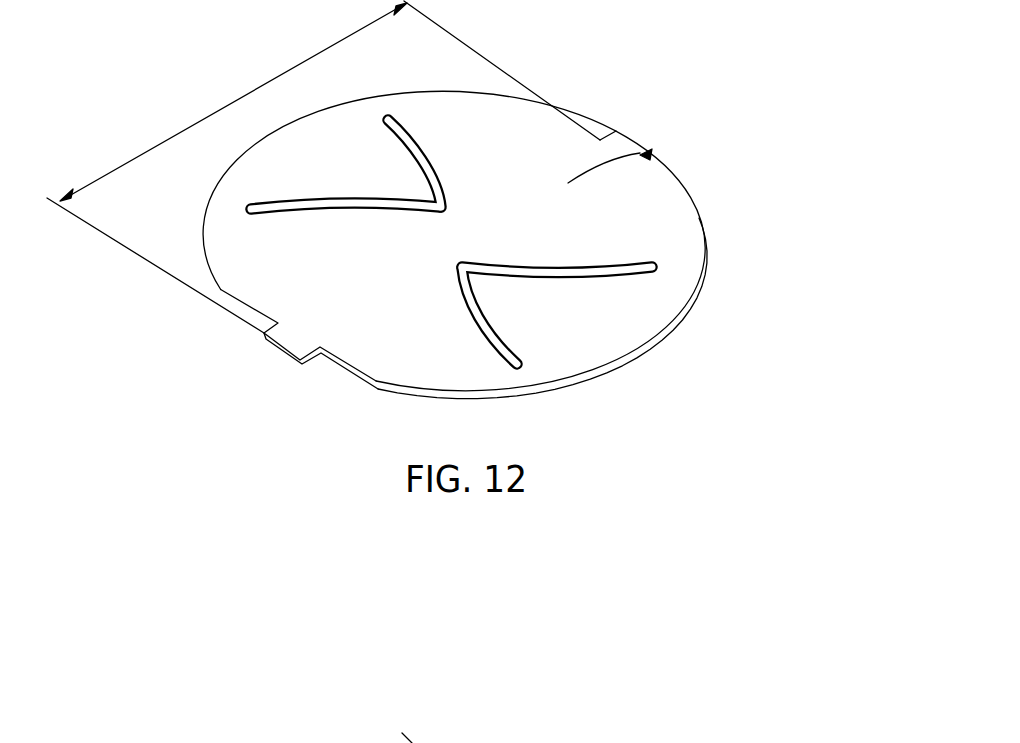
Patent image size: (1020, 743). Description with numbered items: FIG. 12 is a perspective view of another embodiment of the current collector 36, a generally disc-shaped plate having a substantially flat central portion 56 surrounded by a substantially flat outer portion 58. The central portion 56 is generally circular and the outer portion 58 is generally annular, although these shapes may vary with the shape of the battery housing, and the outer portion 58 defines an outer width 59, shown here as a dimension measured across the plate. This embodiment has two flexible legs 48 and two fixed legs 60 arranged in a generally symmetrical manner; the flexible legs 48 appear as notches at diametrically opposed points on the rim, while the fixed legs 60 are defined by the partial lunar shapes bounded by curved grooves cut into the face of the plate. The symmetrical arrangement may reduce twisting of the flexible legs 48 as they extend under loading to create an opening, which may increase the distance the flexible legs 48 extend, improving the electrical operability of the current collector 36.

The current collector 36 is at (613, 23).
The flexible legs 48 is at (652, 154).
The central portion 56 is at (448, 245).
The outer portion 58 is at (303, 137).
The outer width 59 is at (237, 101).
The fixed legs 60 is at (373, 172).